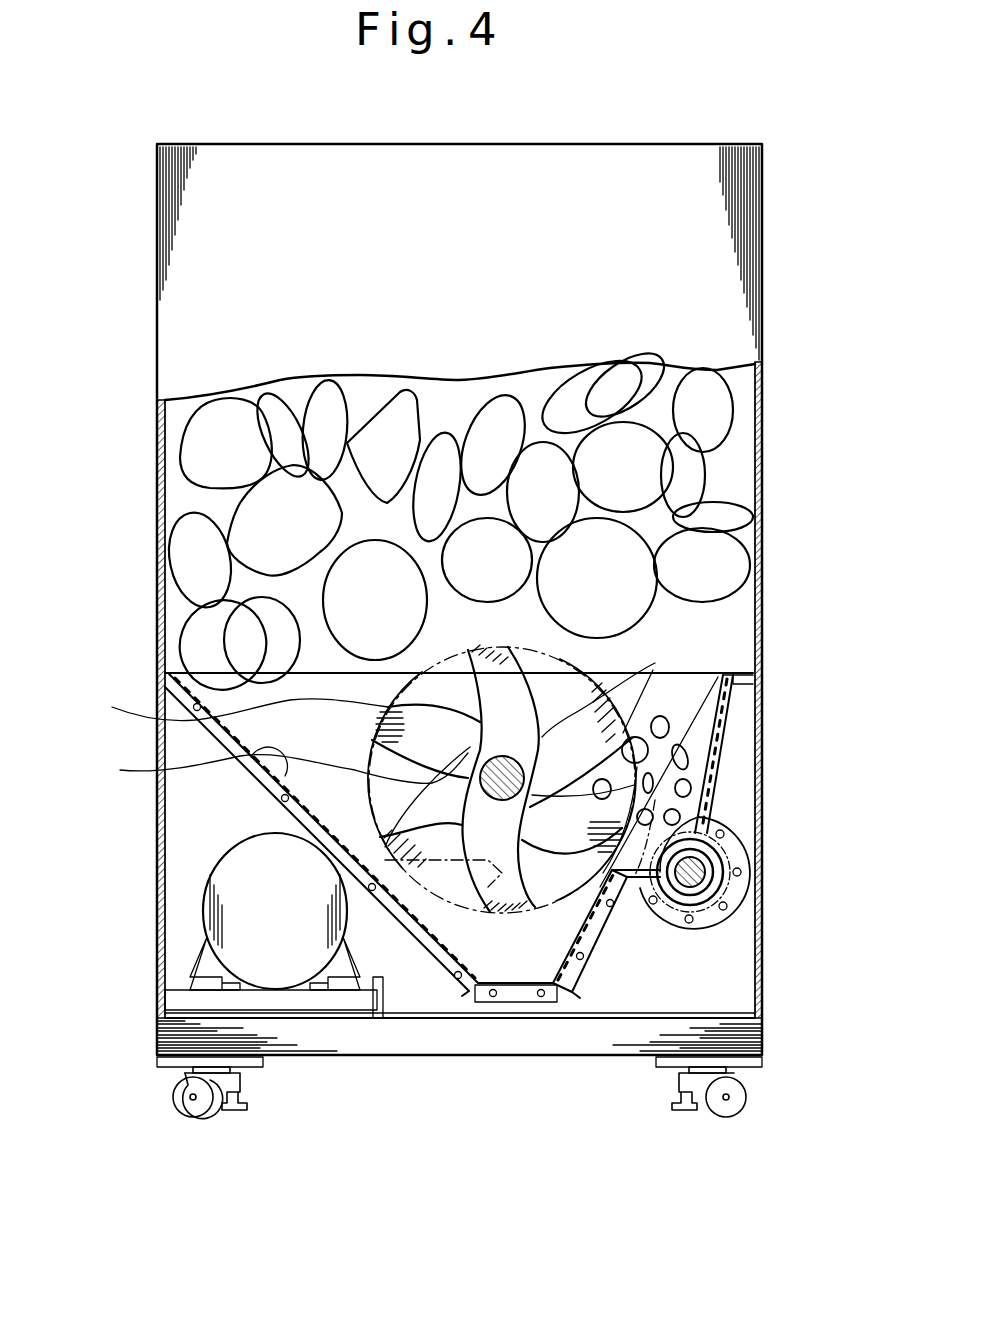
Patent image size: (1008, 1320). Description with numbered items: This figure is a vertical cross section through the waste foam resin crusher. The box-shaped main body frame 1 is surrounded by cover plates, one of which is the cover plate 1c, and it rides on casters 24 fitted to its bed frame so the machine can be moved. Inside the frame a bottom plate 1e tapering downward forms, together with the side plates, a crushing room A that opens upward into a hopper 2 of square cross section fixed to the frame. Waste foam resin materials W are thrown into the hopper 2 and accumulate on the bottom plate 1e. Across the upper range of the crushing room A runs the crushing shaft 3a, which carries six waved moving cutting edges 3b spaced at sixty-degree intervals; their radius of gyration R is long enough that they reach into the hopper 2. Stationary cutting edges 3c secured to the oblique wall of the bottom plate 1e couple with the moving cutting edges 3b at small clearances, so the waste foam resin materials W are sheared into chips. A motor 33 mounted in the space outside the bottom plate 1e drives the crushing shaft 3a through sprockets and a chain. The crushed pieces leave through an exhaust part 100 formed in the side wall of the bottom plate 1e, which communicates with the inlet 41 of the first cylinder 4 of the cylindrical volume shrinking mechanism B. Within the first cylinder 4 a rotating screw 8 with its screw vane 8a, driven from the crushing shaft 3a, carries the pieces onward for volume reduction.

The main body frame 1 is at (768, 995).
The cover plate 1c is at (710, 277).
The bottom plate 1e is at (275, 767).
The hopper 2 is at (725, 492).
The crushing shaft 3a is at (410, 762).
The moving cutting edges 3b is at (535, 683).
The stationary cutting edges 3c is at (470, 900).
The first cylinder 4 is at (733, 890).
The rotating screw 8 is at (715, 847).
The screw vane 8a is at (707, 865).
The casters 24 is at (747, 1103).
The motor 33 is at (227, 893).
The inlet 41 is at (707, 817).
The exhaust part 100 is at (717, 787).
The crushing room A is at (680, 703).
The cylindrical volume shrinking mechanism B is at (712, 908).
The radius of gyration R is at (235, 710).
The waste foam resin materials W is at (650, 455).